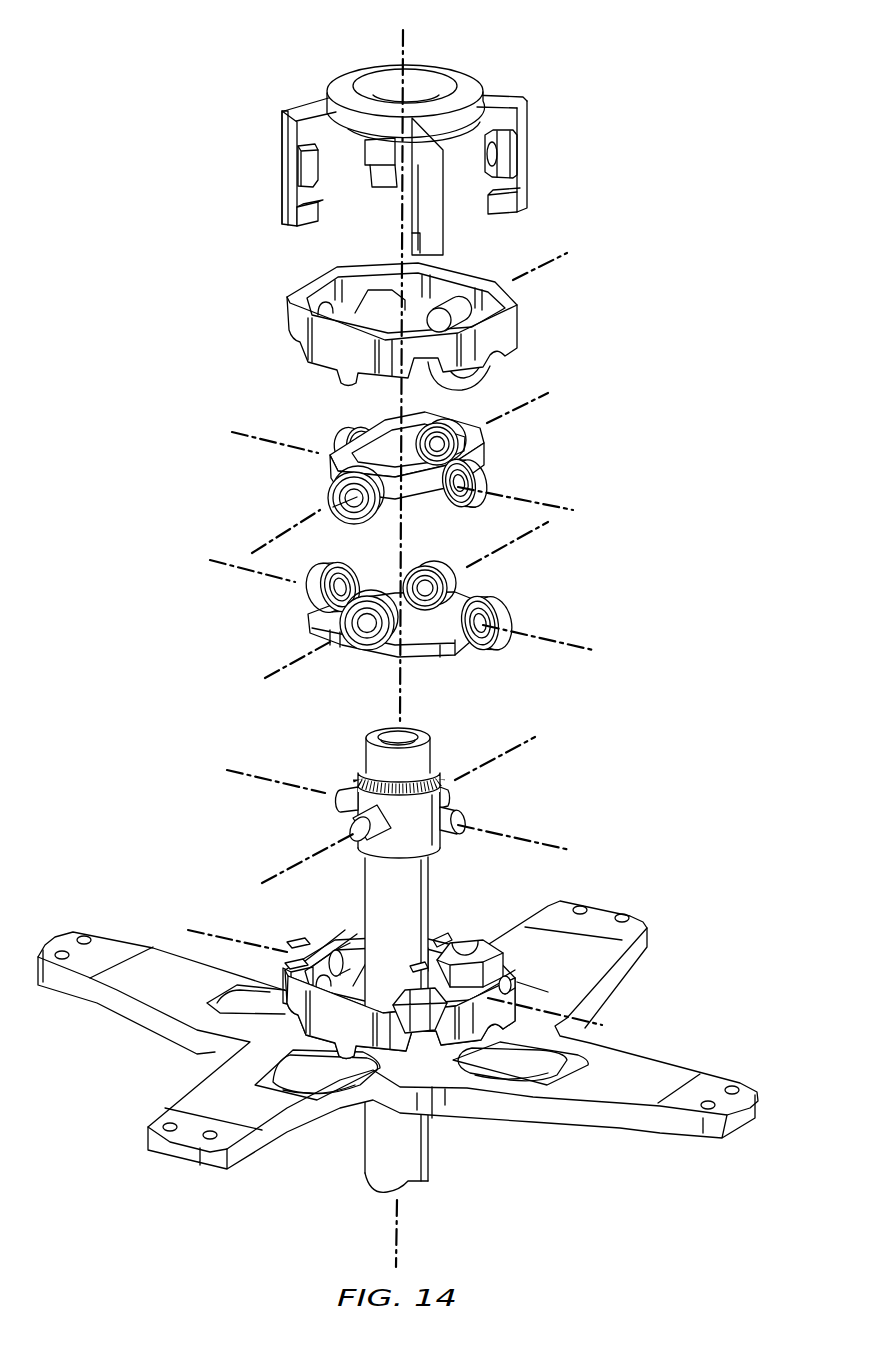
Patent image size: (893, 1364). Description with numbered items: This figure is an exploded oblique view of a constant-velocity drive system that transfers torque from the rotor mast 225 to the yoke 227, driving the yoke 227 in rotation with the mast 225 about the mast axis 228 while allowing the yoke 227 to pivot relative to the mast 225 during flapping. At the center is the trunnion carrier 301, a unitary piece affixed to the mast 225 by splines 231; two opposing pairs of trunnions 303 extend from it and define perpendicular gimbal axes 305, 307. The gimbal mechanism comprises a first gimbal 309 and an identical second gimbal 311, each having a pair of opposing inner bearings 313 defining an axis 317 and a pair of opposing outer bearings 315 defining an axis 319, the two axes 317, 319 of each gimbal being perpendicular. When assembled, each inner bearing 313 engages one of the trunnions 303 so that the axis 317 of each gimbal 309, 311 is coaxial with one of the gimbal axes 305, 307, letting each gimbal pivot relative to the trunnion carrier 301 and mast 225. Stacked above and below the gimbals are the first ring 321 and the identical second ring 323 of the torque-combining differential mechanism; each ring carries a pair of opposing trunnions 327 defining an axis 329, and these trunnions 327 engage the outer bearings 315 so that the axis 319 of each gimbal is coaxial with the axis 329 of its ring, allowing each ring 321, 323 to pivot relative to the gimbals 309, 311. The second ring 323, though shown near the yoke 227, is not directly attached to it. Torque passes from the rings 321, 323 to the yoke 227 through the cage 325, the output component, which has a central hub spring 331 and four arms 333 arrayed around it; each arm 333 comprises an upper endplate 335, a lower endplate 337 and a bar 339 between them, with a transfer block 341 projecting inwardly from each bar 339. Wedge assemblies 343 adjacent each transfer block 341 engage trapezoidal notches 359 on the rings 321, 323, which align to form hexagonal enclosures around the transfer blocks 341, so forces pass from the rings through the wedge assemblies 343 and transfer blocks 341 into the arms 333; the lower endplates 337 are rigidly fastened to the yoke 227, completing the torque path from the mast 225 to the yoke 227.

The rotor mast 225 is at (417, 1158).
The yoke 227 is at (627, 1123).
The mast axis 228 is at (398, 1250).
The splines 231 is at (443, 760).
The trunnion carrier 301 is at (432, 842).
The trunnions 303 is at (333, 803).
The gimbal axis 305 is at (557, 847).
The gimbal axis 307 is at (525, 750).
The first gimbal 309 is at (489, 440).
The second gimbal 311 is at (302, 638).
The inner bearings 313 is at (464, 582).
The outer bearings 315 is at (327, 496).
The axis 317 is at (573, 508).
The axis 319 is at (548, 397).
The first ring 321 is at (521, 330).
The second ring 323 is at (300, 1016).
The cage 325 is at (514, 94).
The trunnions 327 is at (461, 297).
The axis 329 is at (568, 256).
The hub spring 331 is at (347, 92).
The arms 333 is at (280, 190).
The upper endplate 335 is at (286, 112).
The lower endplate 337 is at (298, 222).
The bar 339 is at (282, 164).
The transfer block 341 is at (313, 187).
The wedge assemblies 343 is at (519, 148).
The trapezoidal notches 359 is at (462, 390).